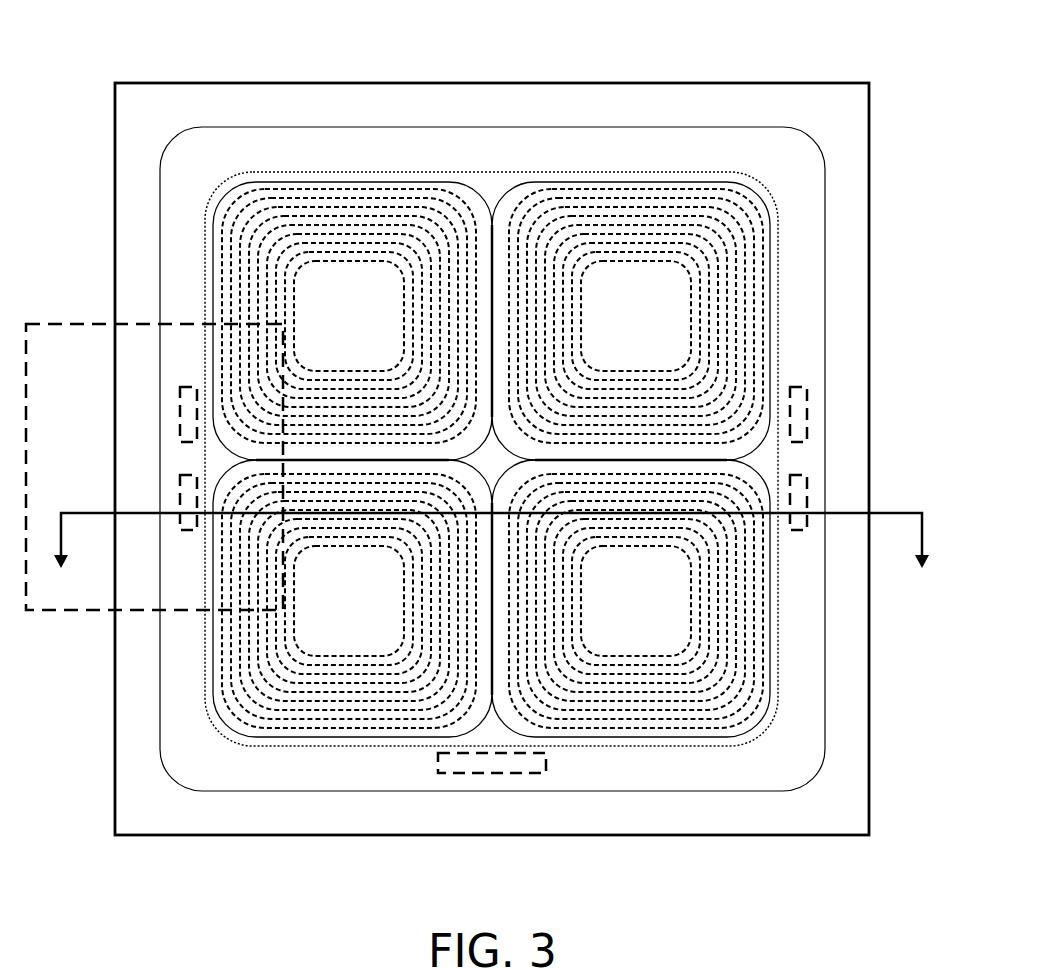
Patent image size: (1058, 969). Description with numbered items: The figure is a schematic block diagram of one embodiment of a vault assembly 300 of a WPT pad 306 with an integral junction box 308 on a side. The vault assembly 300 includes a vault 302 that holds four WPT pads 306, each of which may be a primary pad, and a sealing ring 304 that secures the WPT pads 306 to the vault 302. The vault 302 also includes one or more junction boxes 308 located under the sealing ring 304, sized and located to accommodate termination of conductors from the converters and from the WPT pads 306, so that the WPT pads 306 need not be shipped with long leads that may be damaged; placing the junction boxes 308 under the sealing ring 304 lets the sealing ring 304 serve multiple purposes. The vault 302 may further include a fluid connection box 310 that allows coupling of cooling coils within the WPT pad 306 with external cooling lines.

The vault assembly 300 is at (114, 58).
The vault 302 is at (258, 82).
The sealing ring 304 is at (160, 195).
The WPT pad 306 is at (350, 172).
The junction box 308 is at (178, 413).
The fluid connection box 310 is at (495, 773).